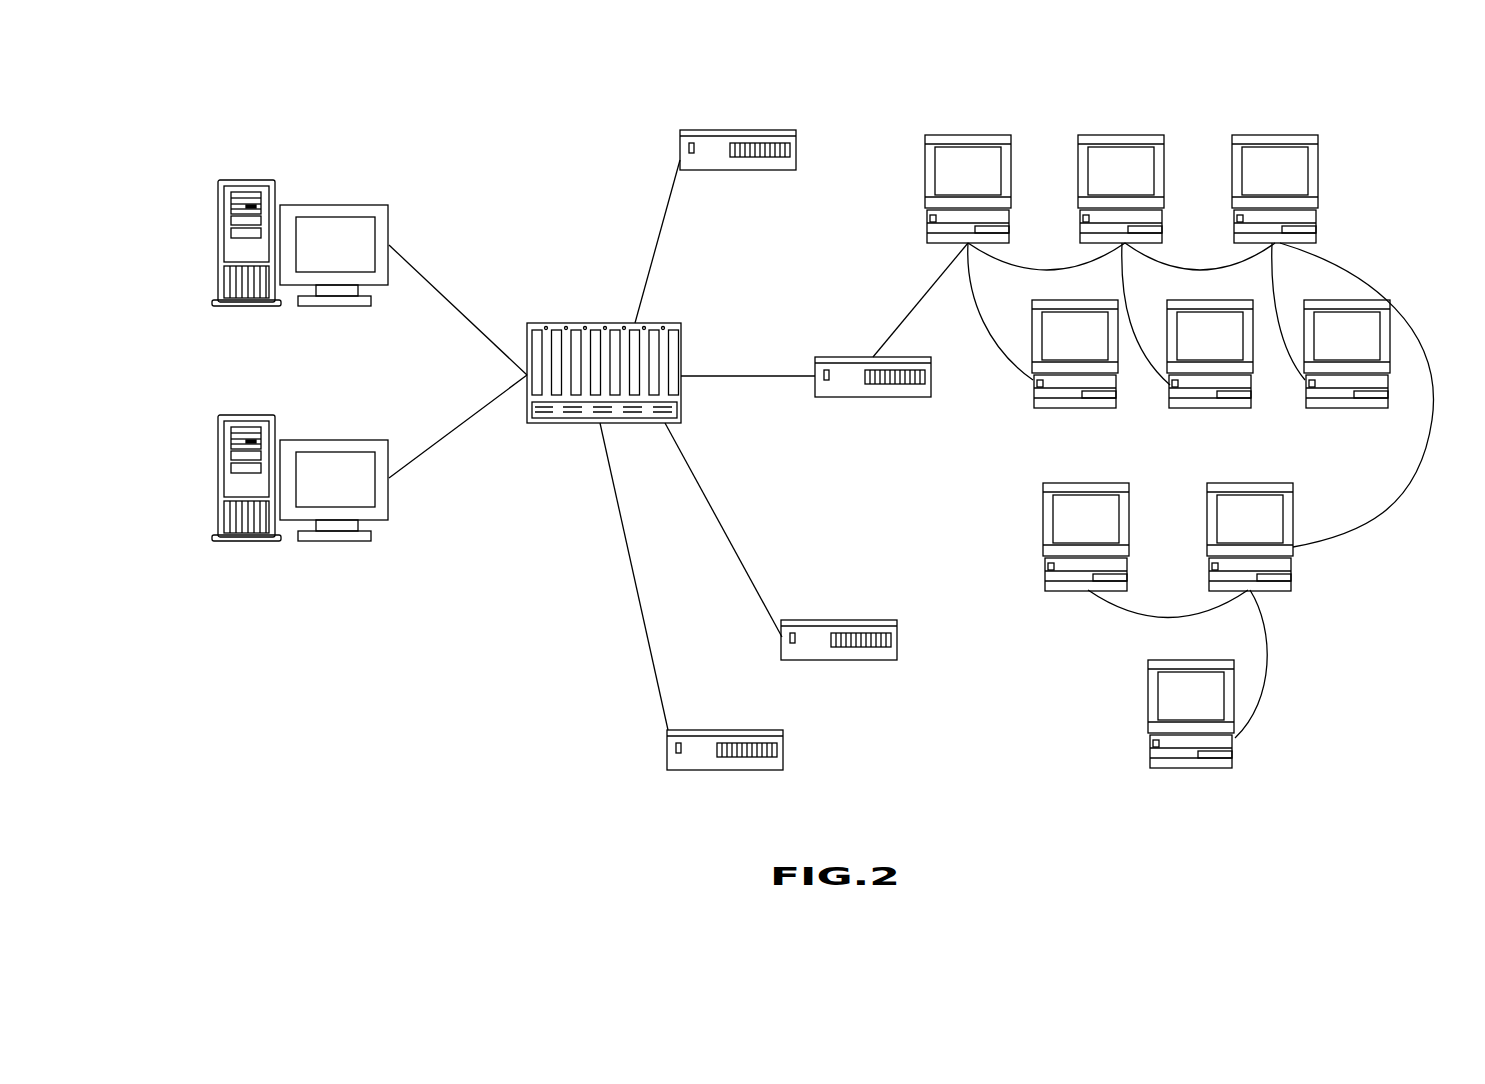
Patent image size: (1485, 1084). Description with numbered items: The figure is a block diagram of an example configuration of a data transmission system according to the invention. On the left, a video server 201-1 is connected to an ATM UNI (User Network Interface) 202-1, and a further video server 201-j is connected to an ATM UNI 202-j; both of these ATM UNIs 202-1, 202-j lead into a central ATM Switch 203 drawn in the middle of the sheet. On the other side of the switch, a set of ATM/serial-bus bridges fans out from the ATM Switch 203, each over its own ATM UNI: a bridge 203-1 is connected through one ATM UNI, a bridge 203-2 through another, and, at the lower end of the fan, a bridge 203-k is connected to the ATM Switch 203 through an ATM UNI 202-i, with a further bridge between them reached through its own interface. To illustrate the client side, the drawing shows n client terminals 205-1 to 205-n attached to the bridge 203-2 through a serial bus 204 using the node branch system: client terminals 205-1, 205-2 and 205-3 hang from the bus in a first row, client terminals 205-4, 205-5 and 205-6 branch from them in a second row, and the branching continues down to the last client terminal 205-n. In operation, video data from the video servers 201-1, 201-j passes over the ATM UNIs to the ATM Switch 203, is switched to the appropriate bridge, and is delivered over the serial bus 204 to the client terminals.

The video server 201-1 is at (244, 180).
The video server 201-j is at (230, 415).
The ATM UNI 202-1 is at (417, 267).
The ATM UNI 202-j is at (414, 470).
The ATM UNI 202-i is at (640, 619).
The ATM Switch 203 is at (537, 430).
The ATM/1394 Bridge 203-1 is at (720, 130).
The ATM/1394 Bridge 203-2 is at (852, 397).
The ATM/1394 Bridge 203-k is at (668, 745).
The 1394 serial bus 204 is at (918, 303).
The client terminal 205-1 is at (965, 136).
The client terminal 205-2 is at (1122, 136).
The client terminal 205-3 is at (1275, 136).
The client terminal 205-4 is at (1108, 409).
The client terminal 205-5 is at (1245, 409).
The client terminal 205-6 is at (1380, 409).
The client terminal 205-n is at (1233, 758).